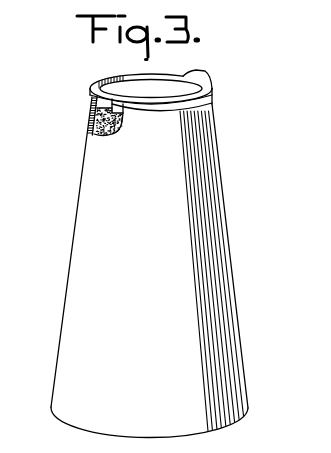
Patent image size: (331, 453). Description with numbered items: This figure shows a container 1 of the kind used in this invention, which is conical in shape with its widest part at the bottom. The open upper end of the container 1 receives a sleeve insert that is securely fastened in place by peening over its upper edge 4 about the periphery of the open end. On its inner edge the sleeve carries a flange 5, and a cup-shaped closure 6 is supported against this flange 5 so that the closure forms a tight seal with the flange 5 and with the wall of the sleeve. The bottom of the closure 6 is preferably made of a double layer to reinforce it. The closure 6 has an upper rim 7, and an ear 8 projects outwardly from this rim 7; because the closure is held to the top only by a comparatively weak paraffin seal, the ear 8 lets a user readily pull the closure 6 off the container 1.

The conical container body 1 is at (70, 283).
The upper edge 4 is at (207, 108).
The flange 5 is at (93, 117).
The cup-shaped closure 6 is at (152, 86).
The upper rim 7 is at (91, 89).
The ear 8 is at (197, 75).